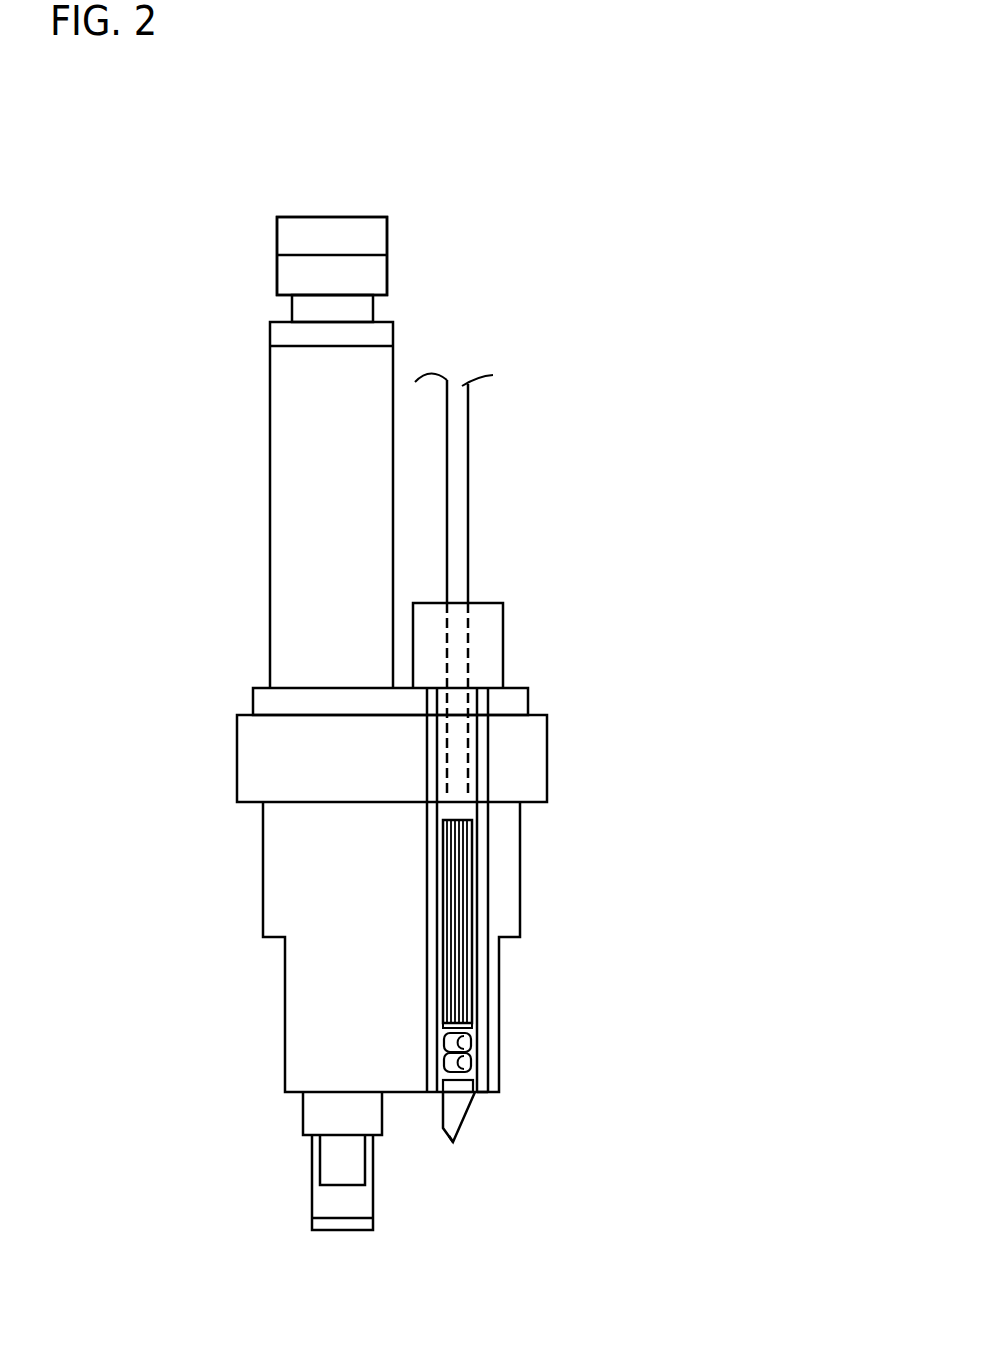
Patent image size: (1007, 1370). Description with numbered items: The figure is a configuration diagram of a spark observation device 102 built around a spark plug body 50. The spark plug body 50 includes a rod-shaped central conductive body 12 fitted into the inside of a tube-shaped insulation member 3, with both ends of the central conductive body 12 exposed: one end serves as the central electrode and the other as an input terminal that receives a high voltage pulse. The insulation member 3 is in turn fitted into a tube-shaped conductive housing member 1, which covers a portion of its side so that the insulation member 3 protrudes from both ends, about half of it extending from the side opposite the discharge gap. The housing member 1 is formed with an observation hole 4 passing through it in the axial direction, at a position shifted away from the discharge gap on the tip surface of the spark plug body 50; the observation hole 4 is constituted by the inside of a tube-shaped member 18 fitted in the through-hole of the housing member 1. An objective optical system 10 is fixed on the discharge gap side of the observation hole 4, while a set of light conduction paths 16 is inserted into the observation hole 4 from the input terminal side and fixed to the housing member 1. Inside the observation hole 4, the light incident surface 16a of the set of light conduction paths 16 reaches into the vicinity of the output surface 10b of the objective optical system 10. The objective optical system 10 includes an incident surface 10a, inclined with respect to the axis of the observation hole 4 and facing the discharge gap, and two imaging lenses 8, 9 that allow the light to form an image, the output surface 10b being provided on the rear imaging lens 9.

The ignition plug 102 is at (542, 235).
The central conductive body 12 is at (292, 276).
The insulation member 3 is at (297, 510).
The set of light conduction paths 16 is at (456, 527).
The observation hole 4 is at (473, 765).
The spark plug body 50 is at (237, 752).
The housing member 1 is at (300, 890).
The tube-shaped member 18 is at (483, 905).
The light incident surface 16a is at (443, 1033).
The output surface 10b is at (456, 1031).
The imaging lens 9 is at (462, 1060).
The imaging lens 8 is at (463, 1081).
The objective optical system 10 is at (463, 1138).
The incident surface 10a is at (450, 1139).